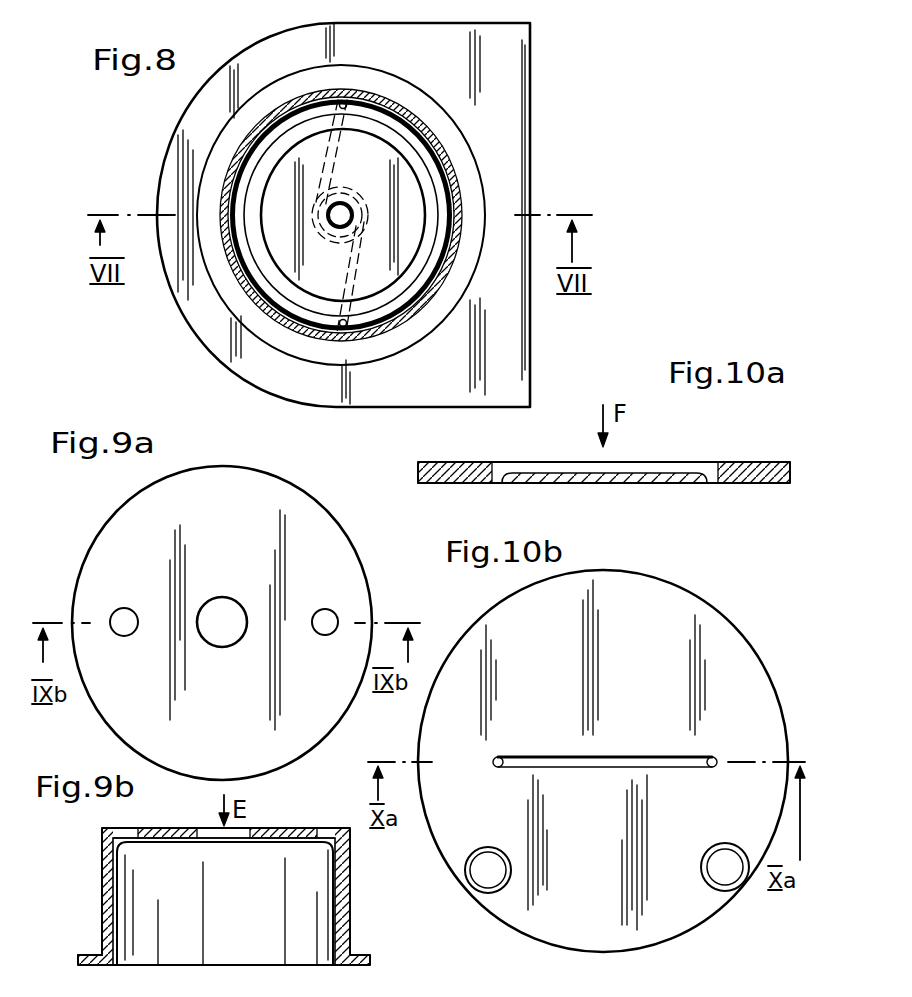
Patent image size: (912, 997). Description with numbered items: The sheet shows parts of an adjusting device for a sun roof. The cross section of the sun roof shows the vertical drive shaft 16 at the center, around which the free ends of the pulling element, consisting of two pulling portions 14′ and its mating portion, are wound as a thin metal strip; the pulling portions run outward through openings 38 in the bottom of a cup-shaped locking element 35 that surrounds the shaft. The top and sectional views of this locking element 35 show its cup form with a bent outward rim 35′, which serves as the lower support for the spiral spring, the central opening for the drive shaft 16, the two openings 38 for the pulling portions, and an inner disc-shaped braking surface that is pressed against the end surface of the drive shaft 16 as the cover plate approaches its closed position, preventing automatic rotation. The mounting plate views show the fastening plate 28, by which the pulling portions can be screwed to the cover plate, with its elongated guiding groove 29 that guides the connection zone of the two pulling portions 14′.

In FIG. 8, the pulling portion 14′ is at (355, 95).
In FIG. 8, the cup-shaped locking element 35 is at (452, 177).
In FIG. 9B, the cup-shaped locking element 35 is at (278, 826).
In FIG. 8, the drive shaft 16 is at (420, 220).
In FIG. 9A, the opening 38 is at (125, 636).
In FIG. 9B, the opening 38 is at (116, 843).
In FIG. 9B, the bent outward rim 35′ is at (92, 953).
In FIG. 10A, the fastening plate 28 is at (760, 468).
In FIG. 10B, the fastening plate 28 is at (725, 643).
In FIG. 10A, the guiding groove 29 is at (693, 467).
In FIG. 10B, the guiding groove 29 is at (651, 756).